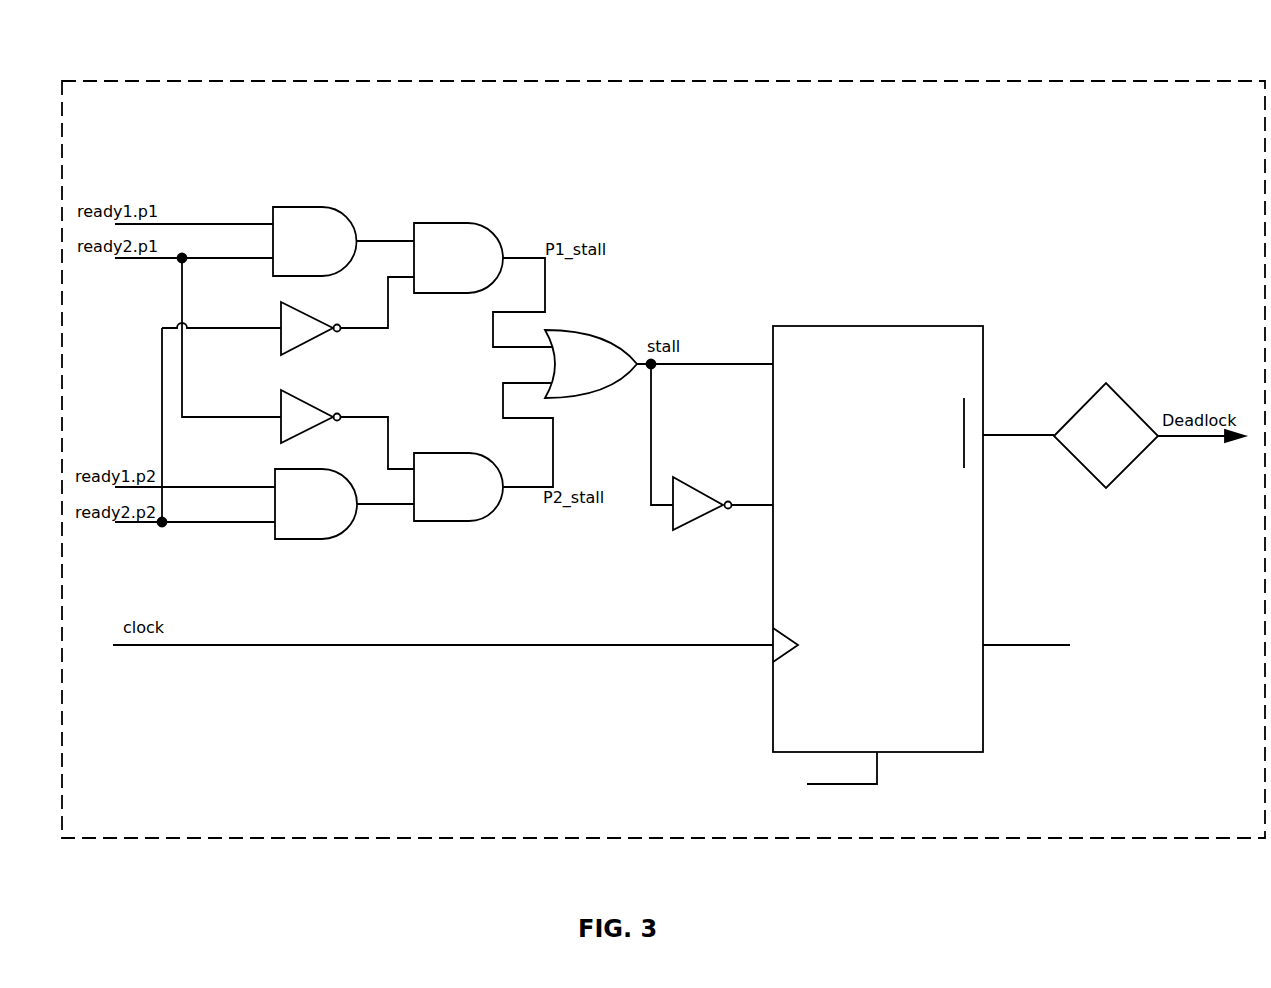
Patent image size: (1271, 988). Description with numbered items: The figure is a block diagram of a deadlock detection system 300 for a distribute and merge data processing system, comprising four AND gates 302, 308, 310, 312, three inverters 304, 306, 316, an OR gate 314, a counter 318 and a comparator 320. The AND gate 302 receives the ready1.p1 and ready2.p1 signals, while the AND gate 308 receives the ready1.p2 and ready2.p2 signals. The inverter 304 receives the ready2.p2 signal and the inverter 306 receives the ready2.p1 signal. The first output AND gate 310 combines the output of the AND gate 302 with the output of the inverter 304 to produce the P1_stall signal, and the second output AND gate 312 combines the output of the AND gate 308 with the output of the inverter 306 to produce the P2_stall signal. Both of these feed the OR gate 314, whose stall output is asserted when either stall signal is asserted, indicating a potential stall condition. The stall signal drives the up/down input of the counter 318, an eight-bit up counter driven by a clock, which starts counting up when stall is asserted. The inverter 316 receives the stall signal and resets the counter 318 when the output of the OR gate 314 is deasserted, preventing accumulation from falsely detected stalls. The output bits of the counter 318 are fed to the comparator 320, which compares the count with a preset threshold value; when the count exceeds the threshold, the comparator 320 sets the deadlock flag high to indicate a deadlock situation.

The system 300 is at (88, 81).
The AND gate 302 is at (350, 215).
The inverter 304 is at (307, 347).
The inverter 306 is at (305, 400).
The AND gate 308 is at (353, 530).
The AND gate U1 310 is at (490, 227).
The AND gate U2 312 is at (488, 522).
The OR gate 314 is at (605, 395).
The inverter 316 is at (690, 520).
The counter 318 is at (938, 326).
The comparator 320 is at (1125, 400).